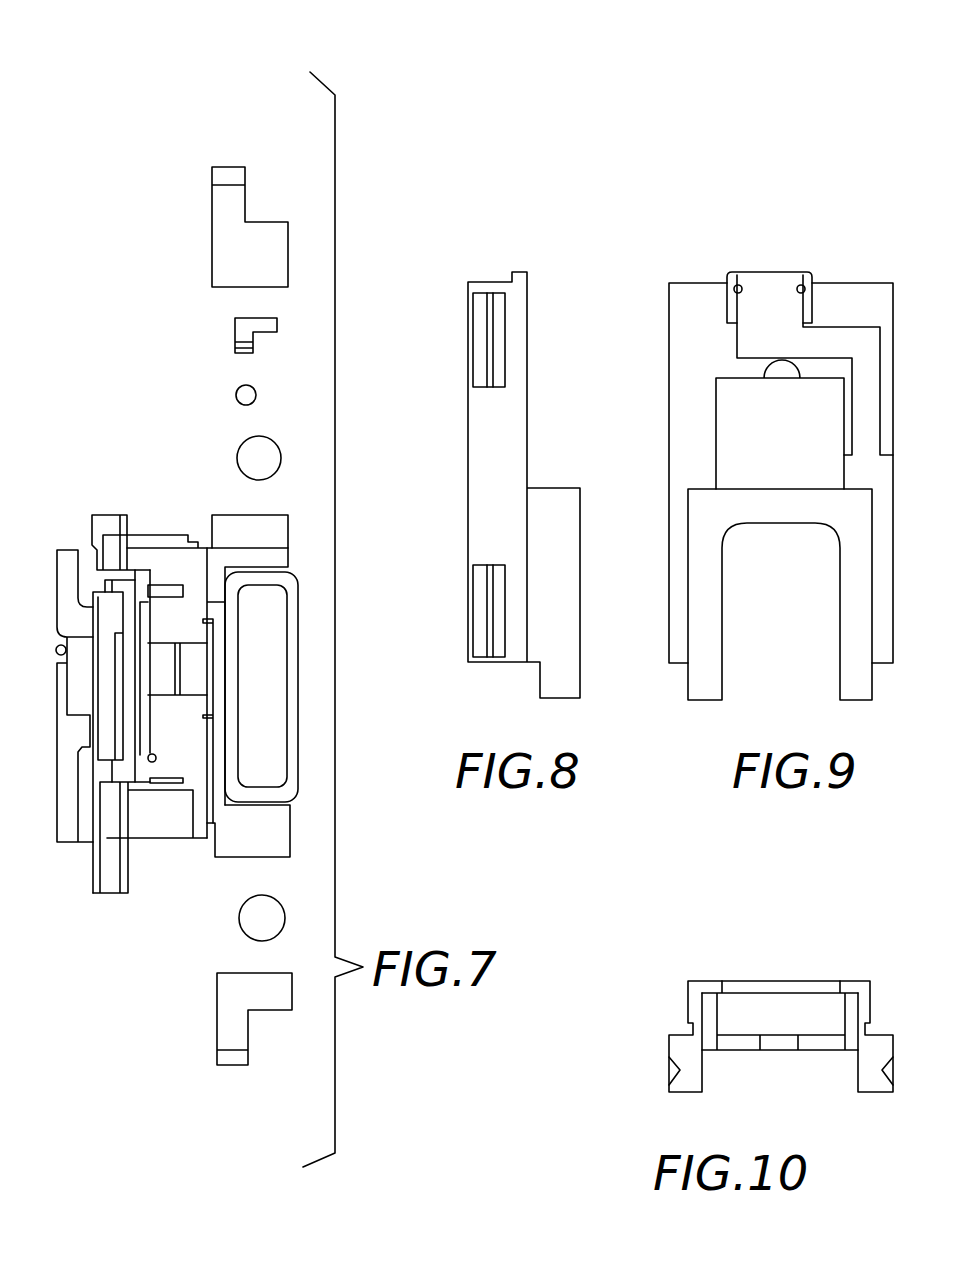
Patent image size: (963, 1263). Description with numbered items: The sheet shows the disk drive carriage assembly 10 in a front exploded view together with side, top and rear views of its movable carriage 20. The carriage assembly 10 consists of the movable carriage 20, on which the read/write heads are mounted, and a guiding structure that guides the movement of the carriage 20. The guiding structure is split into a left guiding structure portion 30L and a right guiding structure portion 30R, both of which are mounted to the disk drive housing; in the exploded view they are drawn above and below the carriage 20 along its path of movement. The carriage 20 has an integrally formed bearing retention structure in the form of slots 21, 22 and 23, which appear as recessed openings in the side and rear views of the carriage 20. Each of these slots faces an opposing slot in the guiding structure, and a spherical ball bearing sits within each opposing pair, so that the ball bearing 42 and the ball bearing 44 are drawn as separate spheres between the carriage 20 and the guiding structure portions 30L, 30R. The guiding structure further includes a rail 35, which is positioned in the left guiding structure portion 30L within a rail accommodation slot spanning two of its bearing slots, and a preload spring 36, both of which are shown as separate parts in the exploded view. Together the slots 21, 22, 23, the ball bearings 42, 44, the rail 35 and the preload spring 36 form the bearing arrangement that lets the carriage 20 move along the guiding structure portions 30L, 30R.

In FIG. 7, the carriage assembly 10 is at (163, 110).
In FIG. 7, the movable carriage 20 is at (215, 515).
In FIG. 8, the movable carriage 20 is at (527, 447).
In FIG. 9, the movable carriage 20 is at (669, 337).
In FIG. 10, the movable carriage 20 is at (855, 981).
In FIG. 8, the slot 21 is at (490, 620).
In FIG. 10, the slot 21 is at (673, 1070).
In FIG. 8, the slot 22 is at (487, 348).
In FIG. 10, the slot 23 is at (888, 1068).
In FIG. 7, the left guiding structure portion 30L is at (212, 167).
In FIG. 7, the right guiding structure portion 30R is at (217, 1005).
In FIG. 7, the rail 35 is at (257, 395).
In FIG. 7, the preload spring 36 is at (235, 332).
In FIG. 7, the ball bearing 42 is at (237, 458).
In FIG. 7, the ball bearing 44 is at (239, 918).